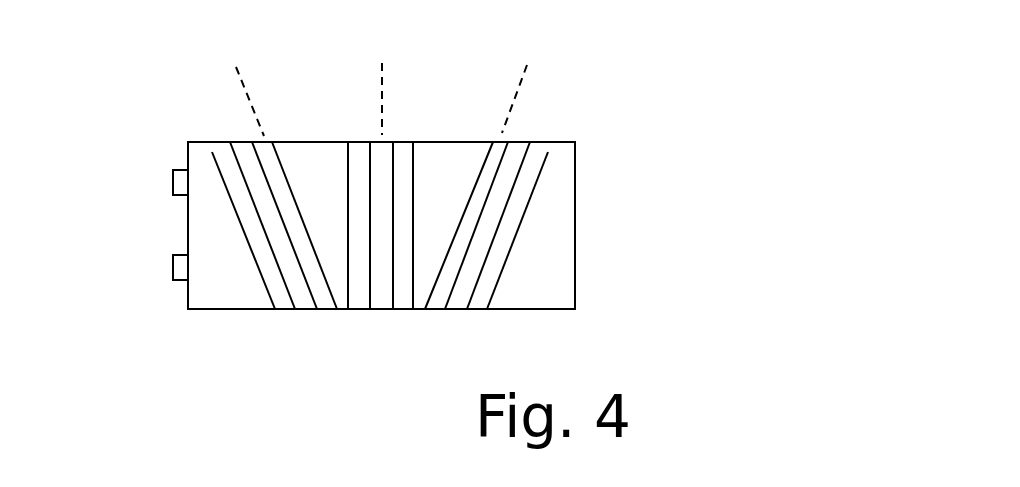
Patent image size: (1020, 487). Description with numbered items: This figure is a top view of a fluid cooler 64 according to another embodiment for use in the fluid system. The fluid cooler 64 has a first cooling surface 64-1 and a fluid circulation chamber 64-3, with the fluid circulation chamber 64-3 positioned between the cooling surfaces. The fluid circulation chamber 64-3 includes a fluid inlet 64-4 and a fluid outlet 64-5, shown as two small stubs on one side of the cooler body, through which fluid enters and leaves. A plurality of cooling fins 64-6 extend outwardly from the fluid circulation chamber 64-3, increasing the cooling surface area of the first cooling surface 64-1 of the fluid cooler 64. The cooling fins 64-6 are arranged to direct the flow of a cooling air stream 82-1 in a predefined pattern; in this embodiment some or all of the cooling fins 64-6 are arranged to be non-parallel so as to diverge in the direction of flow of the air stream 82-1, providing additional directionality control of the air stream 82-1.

The fluid cooler 64 is at (580, 93).
The first cooling surface 64-1 is at (543, 195).
The fluid circulation chamber 64-3 is at (575, 237).
The fluid inlet 64-4 is at (173, 267).
The fluid outlet 64-5 is at (173, 182).
The cooling fins 64-6 is at (545, 283).
The air stream 82-1 is at (252, 104).